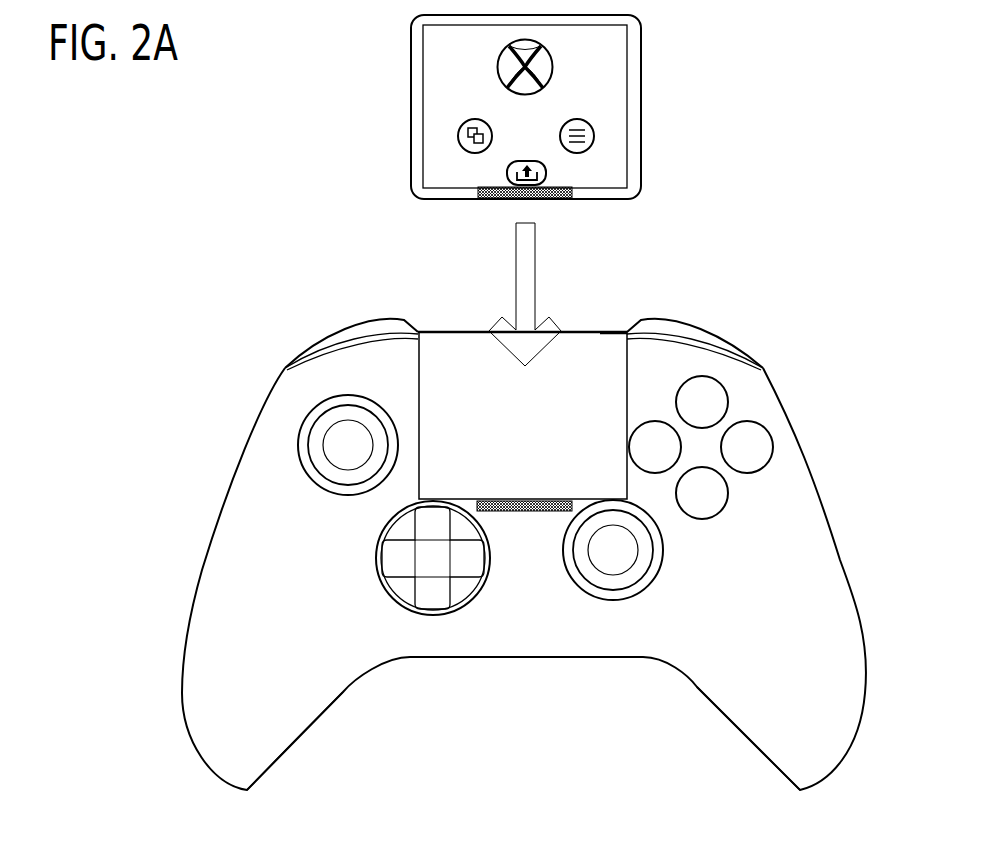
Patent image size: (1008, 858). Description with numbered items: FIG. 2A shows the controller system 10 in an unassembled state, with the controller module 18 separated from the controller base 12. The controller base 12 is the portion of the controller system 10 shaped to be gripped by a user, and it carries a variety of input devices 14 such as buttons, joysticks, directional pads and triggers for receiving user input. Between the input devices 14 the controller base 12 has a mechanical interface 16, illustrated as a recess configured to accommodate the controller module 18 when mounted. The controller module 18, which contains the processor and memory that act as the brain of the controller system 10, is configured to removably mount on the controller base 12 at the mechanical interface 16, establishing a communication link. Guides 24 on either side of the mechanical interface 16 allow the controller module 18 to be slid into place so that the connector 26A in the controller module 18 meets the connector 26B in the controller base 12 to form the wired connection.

The controller system 10 is at (196, 215).
The controller base 12 is at (261, 408).
The input device 14 is at (308, 340).
The mechanical interface 16 is at (461, 341).
The controller module 18 is at (640, 62).
The guides 24 is at (627, 333).
The connector 26A is at (497, 200).
The connector 26B is at (499, 500).